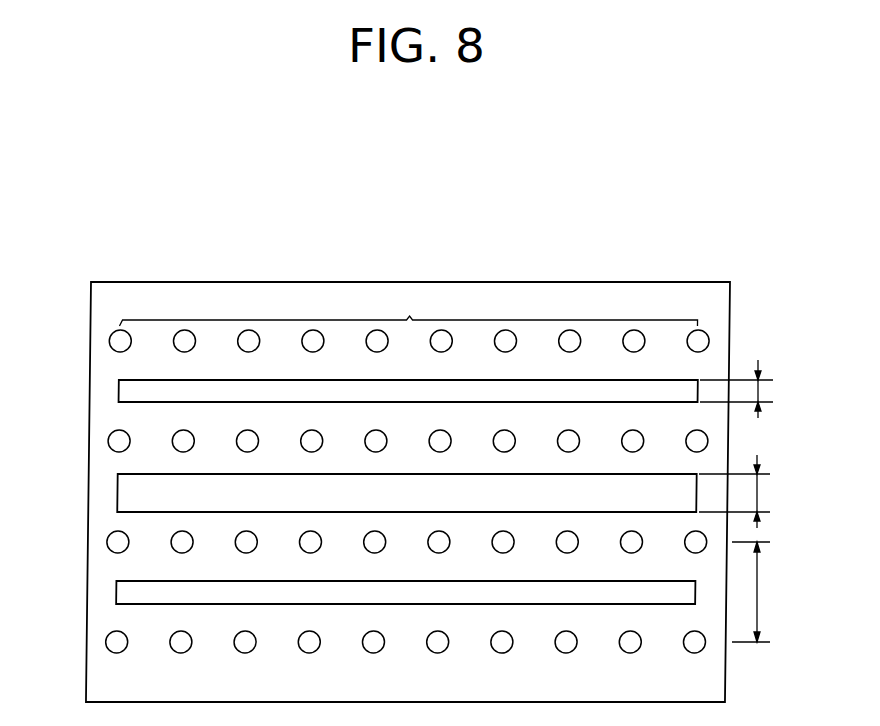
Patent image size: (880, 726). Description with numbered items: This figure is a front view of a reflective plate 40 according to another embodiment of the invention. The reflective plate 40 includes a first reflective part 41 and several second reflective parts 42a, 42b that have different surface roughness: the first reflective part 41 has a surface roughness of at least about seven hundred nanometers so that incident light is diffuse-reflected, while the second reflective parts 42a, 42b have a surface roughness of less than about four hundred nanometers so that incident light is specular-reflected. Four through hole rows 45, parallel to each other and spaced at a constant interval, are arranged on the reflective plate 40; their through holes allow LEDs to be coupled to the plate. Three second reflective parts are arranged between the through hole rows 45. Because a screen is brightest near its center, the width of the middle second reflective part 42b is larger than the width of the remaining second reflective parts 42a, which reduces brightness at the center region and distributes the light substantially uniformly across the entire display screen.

The reflective plate 40 is at (411, 445).
The first reflective part 41 is at (408, 492).
The second reflective parts 42a is at (408, 391).
The middle second reflective part 42b is at (406, 493).
The through hole rows 45 is at (408, 484).